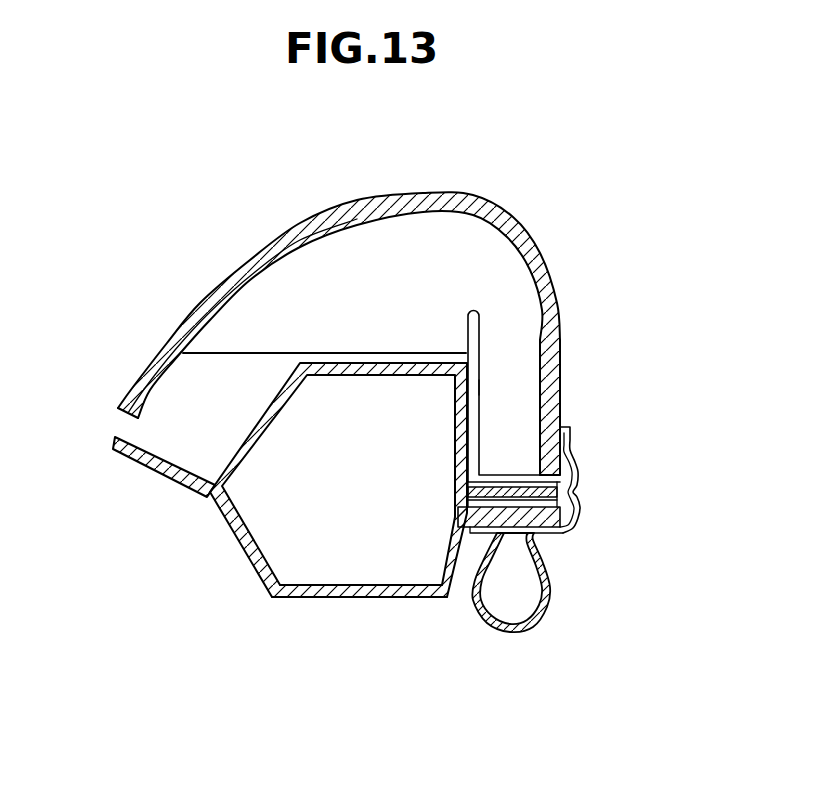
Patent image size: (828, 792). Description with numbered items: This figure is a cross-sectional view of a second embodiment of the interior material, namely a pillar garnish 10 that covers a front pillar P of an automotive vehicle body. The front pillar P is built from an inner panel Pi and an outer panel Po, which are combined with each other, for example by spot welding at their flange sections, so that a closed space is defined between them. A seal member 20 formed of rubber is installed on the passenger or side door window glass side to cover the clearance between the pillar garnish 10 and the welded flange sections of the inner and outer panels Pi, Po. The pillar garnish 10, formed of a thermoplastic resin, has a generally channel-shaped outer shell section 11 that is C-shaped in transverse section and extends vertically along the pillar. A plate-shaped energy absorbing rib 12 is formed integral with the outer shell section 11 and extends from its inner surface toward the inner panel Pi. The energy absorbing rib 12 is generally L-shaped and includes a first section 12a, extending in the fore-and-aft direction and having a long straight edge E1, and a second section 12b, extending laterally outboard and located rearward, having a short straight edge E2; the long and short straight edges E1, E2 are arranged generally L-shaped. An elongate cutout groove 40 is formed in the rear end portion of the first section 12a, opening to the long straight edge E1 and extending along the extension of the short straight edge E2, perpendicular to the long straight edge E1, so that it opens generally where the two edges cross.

The pillar garnish 10 is at (386, 306).
The outer shell section 11 is at (553, 285).
The energy absorbing rib 12 is at (458, 216).
The first section 12a is at (247, 295).
The second section 12b is at (518, 408).
The cutout groove 40 is at (478, 338).
The seal member 20 is at (552, 575).
The long straight edge E1 is at (230, 357).
The short straight edge E2 is at (480, 387).
The front pillar P is at (285, 520).
The inner panel Pi is at (170, 478).
The outer panel Po is at (387, 597).